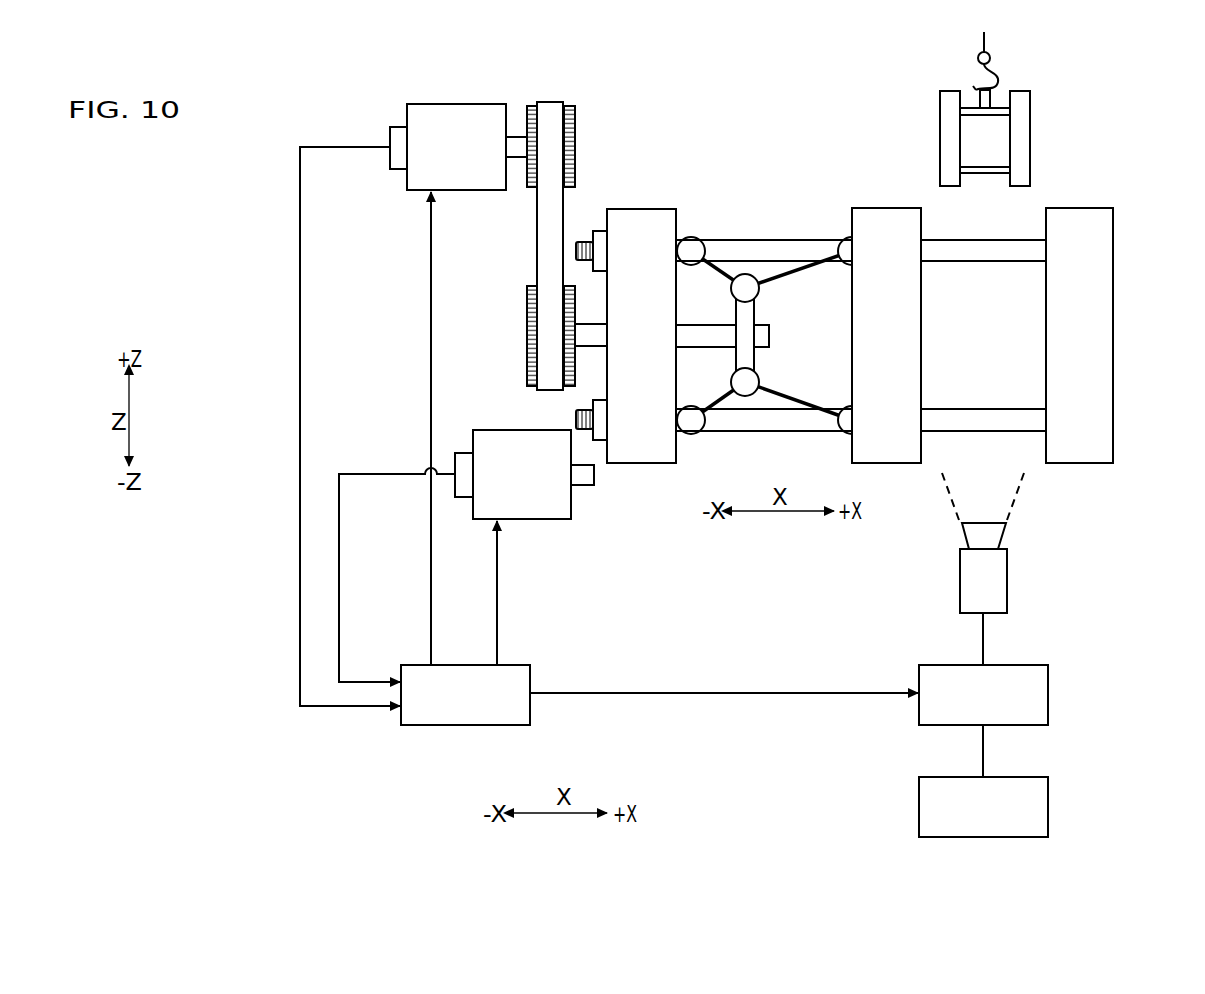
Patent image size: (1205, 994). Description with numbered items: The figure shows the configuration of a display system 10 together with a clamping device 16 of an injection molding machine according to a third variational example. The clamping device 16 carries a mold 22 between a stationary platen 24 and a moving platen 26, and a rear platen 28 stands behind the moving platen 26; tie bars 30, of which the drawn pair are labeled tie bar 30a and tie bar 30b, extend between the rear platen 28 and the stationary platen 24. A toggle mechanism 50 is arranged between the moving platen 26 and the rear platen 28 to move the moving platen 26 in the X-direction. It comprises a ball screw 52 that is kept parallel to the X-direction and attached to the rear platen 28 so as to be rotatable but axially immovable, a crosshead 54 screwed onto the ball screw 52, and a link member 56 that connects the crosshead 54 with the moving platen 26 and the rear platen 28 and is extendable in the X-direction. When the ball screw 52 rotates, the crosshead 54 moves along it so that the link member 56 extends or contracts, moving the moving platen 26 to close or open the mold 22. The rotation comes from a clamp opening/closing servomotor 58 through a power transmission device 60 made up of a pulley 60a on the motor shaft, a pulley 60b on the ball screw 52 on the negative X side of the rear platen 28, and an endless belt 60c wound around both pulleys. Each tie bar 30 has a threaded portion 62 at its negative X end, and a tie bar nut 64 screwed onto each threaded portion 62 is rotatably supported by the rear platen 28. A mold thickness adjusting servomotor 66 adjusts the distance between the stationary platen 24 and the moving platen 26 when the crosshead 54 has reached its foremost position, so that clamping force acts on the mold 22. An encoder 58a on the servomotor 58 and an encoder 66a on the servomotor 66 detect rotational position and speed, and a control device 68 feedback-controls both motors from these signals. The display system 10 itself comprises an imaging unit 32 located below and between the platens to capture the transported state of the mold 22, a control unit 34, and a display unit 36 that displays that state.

The display system 10 is at (1054, 655).
The clamping device 16 is at (1122, 196).
The mold 22 is at (940, 108).
The stationary platen 24 is at (1080, 208).
The moving platen 26 is at (888, 208).
The rear platen 28 is at (642, 208).
The tie bars 30 is at (983, 335).
The tie bar 30a is at (965, 249).
The tie bar 30b is at (964, 420).
The imaging unit 32 is at (1007, 586).
The control unit 34 is at (1048, 695).
The display unit 36 is at (1028, 795).
The toggle mechanism 50 is at (787, 314).
The ball screw 52 is at (697, 333).
The crosshead 54 is at (745, 317).
The link member 56 is at (798, 273).
The clamp opening/closing servomotor 58 is at (453, 118).
The encoder 58a is at (390, 128).
The power transmission device 60 is at (553, 213).
The pulley 60a is at (575, 108).
The pulley 60b is at (527, 330).
The endless belt 60c is at (550, 250).
The threaded portion 62 is at (580, 240).
The tie bar nut 64 is at (603, 251).
The mold thickness adjusting servomotor 66 is at (544, 510).
The encoder 66a is at (462, 462).
The control device 68 is at (455, 727).